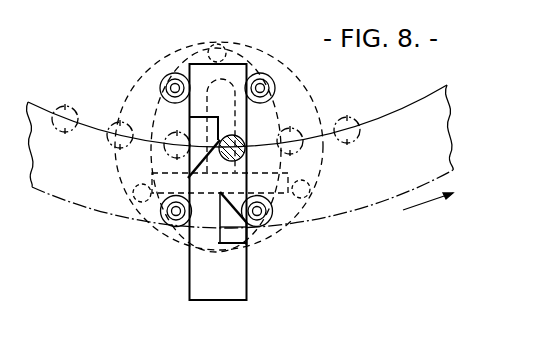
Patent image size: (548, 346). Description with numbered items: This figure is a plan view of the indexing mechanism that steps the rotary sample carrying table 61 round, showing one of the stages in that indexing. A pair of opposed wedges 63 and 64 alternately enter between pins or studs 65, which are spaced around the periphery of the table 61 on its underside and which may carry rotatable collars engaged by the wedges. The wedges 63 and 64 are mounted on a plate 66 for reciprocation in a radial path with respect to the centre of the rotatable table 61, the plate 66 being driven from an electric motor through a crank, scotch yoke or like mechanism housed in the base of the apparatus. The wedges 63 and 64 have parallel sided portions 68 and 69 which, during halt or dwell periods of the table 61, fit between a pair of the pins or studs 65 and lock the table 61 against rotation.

The table 61 is at (357, 208).
The wedge 63 is at (230, 246).
The wedge 64 is at (195, 130).
The pins or studs 65 is at (243, 145).
The plate 66 is at (246, 296).
The parallel sided portion 68 is at (219, 238).
The parallel sided portion 69 is at (247, 236).